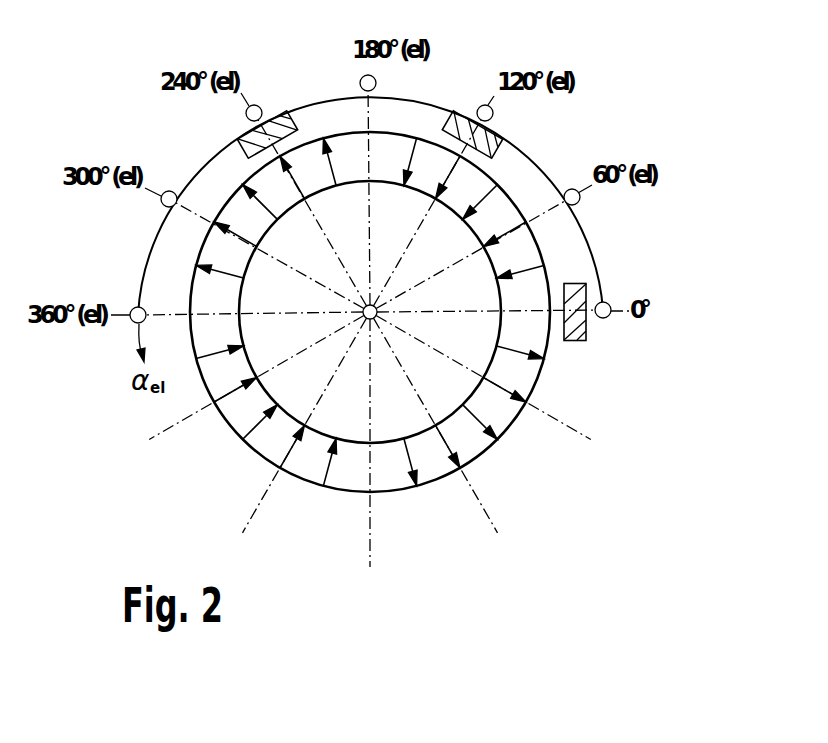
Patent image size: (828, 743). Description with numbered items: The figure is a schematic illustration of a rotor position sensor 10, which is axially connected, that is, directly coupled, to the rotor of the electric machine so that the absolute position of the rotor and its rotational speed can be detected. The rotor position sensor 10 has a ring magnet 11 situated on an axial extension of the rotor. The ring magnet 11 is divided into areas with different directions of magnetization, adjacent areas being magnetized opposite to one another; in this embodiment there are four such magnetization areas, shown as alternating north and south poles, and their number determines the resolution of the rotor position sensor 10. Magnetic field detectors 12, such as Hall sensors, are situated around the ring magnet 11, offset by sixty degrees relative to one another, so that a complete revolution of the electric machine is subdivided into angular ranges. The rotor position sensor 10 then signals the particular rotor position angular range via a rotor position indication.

The rotor position sensor 10 is at (578, 112).
The ring magnet 11 is at (532, 377).
The magnetic field detectors 12 is at (276, 135).